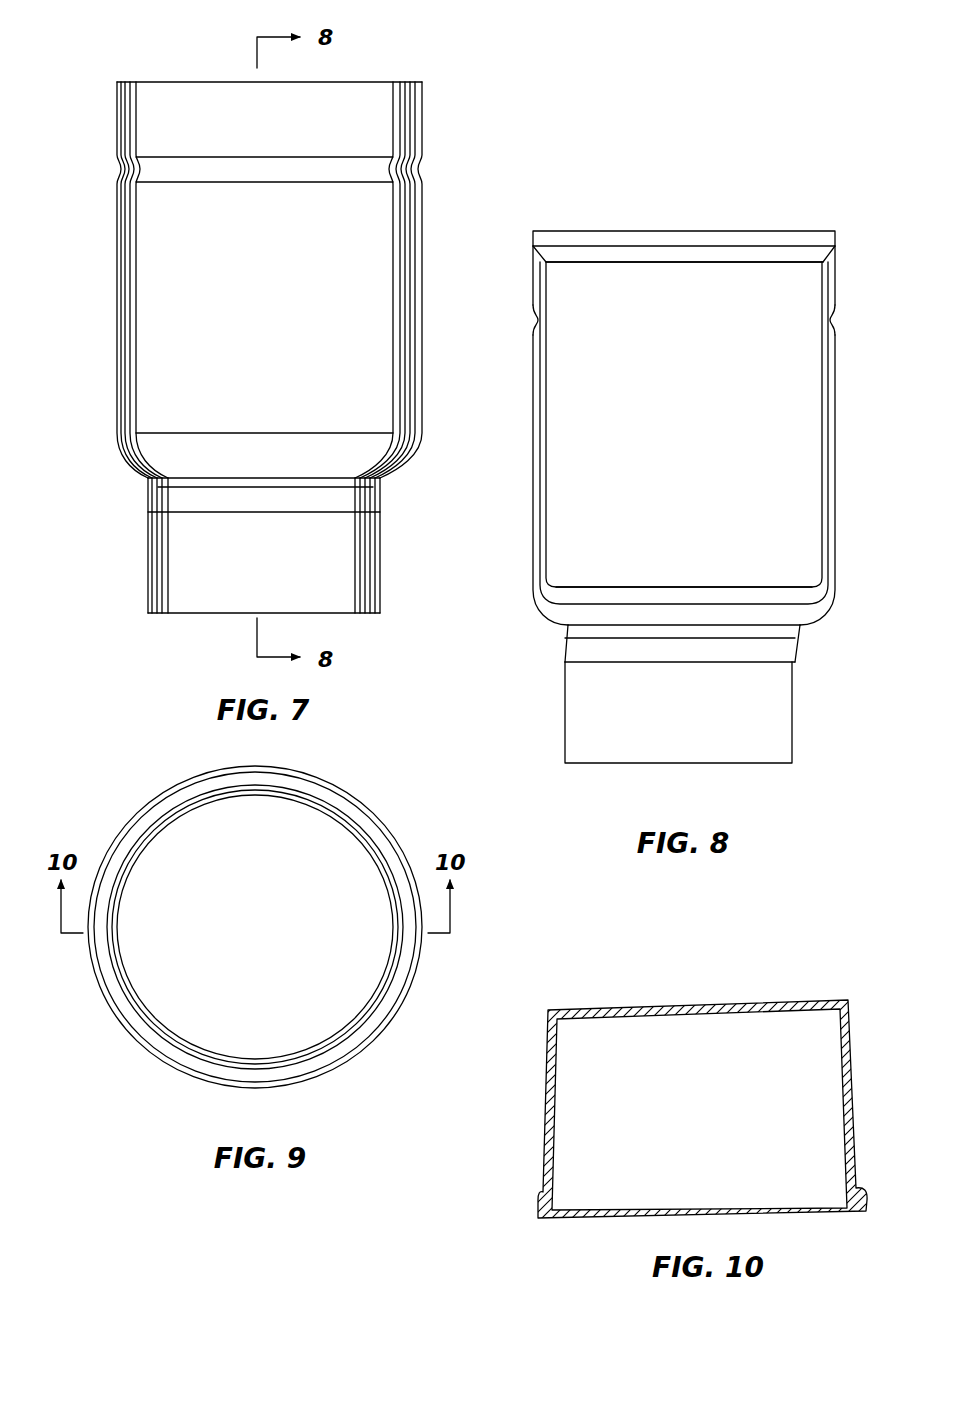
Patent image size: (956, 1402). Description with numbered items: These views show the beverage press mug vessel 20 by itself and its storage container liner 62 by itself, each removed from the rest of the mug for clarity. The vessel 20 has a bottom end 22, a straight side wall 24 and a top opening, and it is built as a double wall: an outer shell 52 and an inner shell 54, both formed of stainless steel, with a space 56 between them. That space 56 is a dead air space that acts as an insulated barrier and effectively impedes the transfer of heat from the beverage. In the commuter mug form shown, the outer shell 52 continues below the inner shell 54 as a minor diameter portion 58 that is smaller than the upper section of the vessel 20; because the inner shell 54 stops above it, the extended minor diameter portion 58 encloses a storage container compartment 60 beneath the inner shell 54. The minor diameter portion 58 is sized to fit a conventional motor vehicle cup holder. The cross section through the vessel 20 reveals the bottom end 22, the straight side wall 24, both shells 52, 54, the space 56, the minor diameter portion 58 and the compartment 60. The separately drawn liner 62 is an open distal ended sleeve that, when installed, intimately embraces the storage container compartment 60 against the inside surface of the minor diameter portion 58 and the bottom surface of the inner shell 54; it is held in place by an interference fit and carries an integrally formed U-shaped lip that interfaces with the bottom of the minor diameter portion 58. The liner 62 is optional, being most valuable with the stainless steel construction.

In FIG. 7, the vessel 20 is at (436, 206).
In FIG. 8, the vessel 20 is at (738, 214).
In FIG. 8, the bottom end 22 is at (808, 597).
In FIG. 8, the straight side wall 24 is at (546, 293).
In FIG. 7, the outer shell 52 is at (116, 296).
In FIG. 8, the outer shell 52 is at (533, 512).
In FIG. 8, the inner shell 54 is at (817, 285).
In FIG. 8, the space 56 is at (538, 390).
In FIG. 7, the minor diameter portion 58 is at (148, 580).
In FIG. 8, the minor diameter portion 58 is at (563, 732).
In FIG. 8, the storage container compartment 60 is at (730, 733).
In FIG. 9, the liner 62 is at (165, 1062).
In FIG. 10, the liner 62 is at (728, 1002).